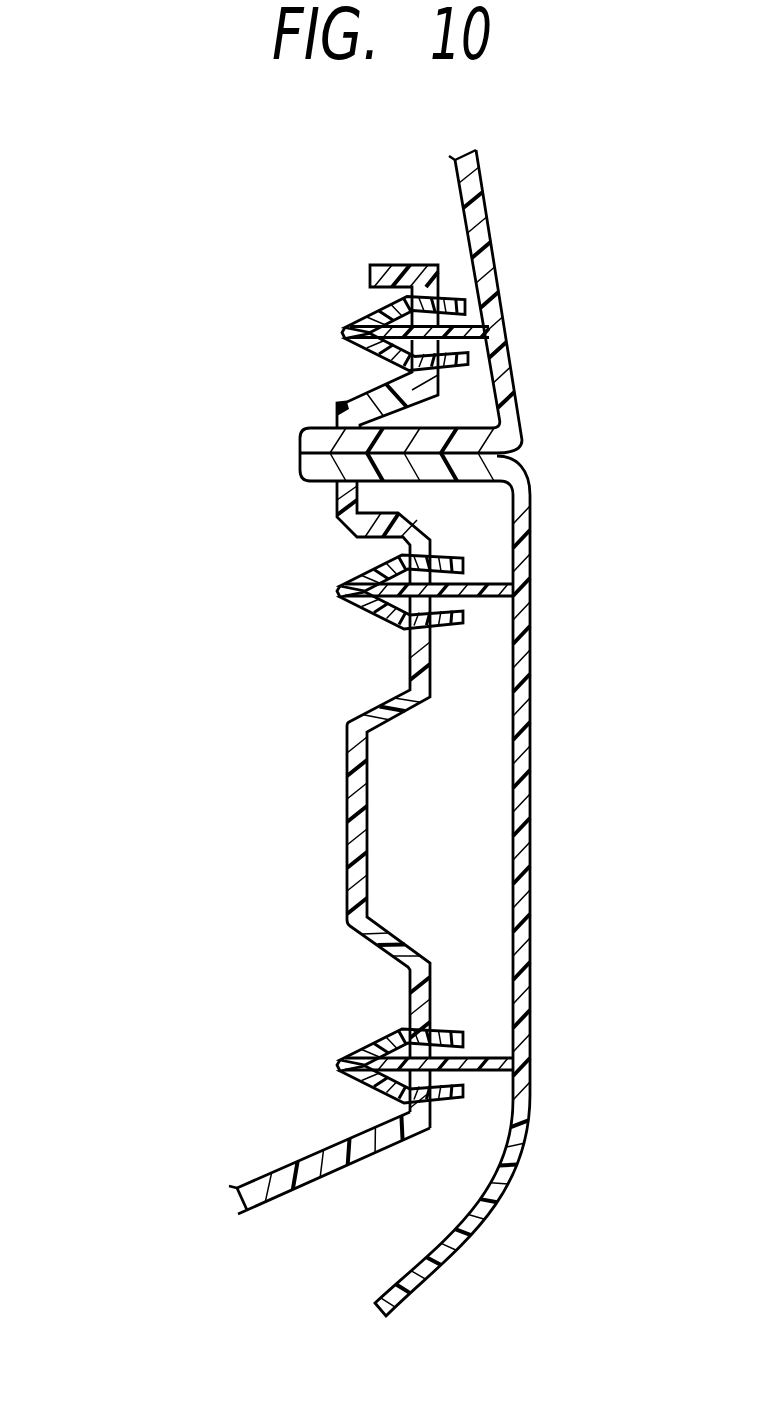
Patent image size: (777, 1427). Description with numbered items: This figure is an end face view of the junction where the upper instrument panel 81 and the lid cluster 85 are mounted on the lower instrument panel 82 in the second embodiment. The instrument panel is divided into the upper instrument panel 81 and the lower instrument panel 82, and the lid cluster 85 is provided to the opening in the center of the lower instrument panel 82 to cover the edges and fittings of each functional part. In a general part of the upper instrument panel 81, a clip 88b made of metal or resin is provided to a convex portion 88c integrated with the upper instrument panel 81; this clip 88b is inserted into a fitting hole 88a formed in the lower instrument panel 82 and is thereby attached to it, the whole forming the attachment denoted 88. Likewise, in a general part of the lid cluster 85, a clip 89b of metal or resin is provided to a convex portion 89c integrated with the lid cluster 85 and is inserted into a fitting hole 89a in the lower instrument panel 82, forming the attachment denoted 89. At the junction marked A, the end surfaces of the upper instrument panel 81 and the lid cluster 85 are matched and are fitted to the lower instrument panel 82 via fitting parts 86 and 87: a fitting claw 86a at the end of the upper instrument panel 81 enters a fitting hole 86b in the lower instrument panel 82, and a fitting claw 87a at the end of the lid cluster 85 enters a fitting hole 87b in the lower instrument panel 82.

The upper instrument panel 81 is at (494, 243).
The lower instrument panel 82 is at (320, 1170).
The lid cluster 85 is at (535, 771).
The fitting part 86 is at (329, 359).
The fitting claw 86a is at (300, 429).
The fitting hole 86b is at (350, 346).
The fitting part 87 is at (340, 790).
The fitting claw 87a is at (300, 478).
The fitting hole 87b is at (337, 488).
The clip 88 is at (379, 307).
The fitting hole 88a is at (448, 297).
The clip 88b is at (372, 362).
The convex portion 88c is at (477, 353).
The clip 89 is at (366, 828).
The fitting hole 89a is at (433, 560).
The clip 89b is at (363, 600).
The convex portion 89c is at (487, 598).
The region A is at (152, 453).